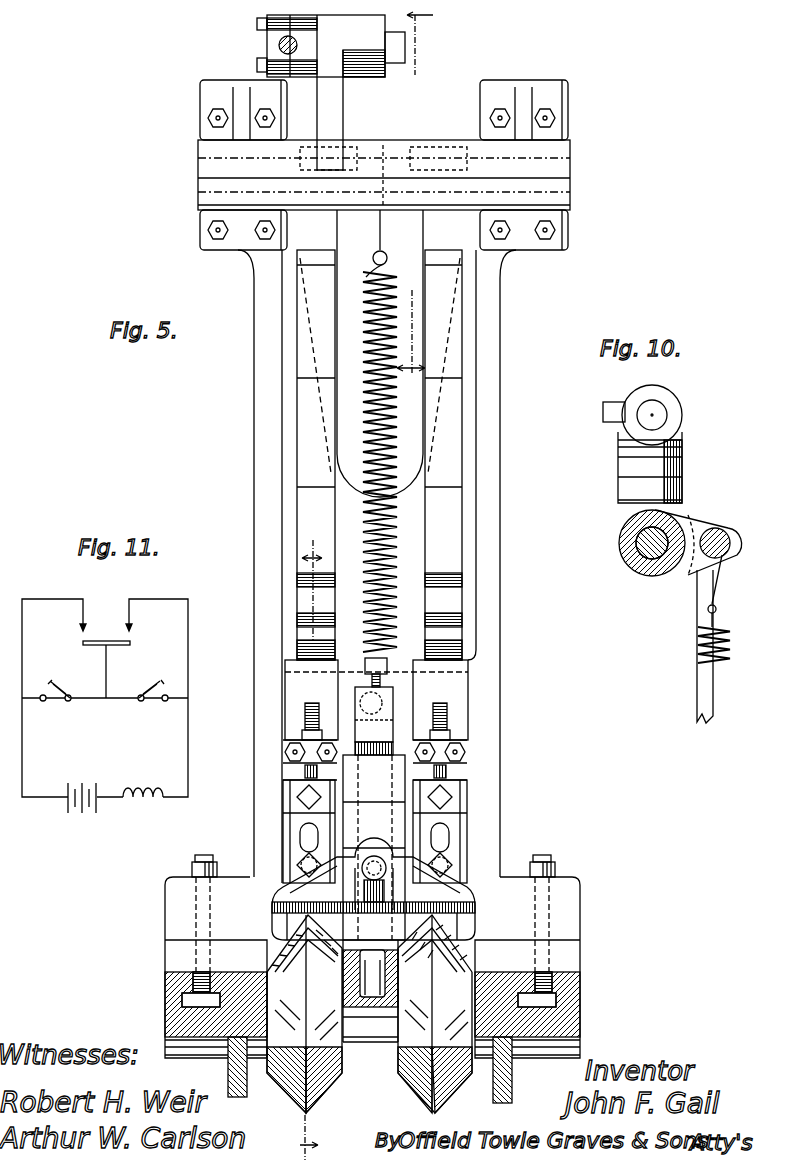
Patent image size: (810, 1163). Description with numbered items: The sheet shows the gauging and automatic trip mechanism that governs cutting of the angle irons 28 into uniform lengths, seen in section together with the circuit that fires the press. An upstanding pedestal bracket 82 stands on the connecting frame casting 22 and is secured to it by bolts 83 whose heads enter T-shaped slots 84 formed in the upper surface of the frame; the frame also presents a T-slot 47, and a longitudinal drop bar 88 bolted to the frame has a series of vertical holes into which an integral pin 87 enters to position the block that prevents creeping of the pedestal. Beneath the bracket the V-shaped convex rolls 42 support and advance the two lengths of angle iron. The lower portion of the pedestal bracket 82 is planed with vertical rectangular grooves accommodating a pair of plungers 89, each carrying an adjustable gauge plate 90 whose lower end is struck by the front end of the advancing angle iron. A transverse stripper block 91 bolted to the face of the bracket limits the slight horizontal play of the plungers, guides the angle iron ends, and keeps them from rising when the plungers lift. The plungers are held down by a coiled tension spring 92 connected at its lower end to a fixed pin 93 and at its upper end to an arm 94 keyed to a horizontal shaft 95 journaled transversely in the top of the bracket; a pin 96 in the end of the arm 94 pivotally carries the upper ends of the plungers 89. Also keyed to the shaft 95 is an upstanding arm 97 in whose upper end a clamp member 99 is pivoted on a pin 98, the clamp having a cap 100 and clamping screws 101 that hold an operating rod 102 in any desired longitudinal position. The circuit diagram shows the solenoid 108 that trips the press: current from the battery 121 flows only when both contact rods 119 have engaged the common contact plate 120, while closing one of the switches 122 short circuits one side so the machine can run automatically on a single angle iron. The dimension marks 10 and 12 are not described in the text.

In FIG. 5, the clearance dimension 10 is at (415, 197).
In FIG. 5, the clearance dimension 12 is at (300, 843).
In FIG. 5, the connecting frame casting 22 is at (513, 1097).
In FIG. 5, the angle irons 28 is at (283, 955).
In FIG. 5, the V-shaped convex rolls 42 is at (400, 1088).
In FIG. 5, the T-slot 47 is at (580, 985).
In FIG. 5, the pedestal bracket 82 is at (492, 400).
In FIG. 5, the bolts 83 is at (215, 872).
In FIG. 5, the T-shaped slots 84 is at (185, 1000).
In FIG. 5, the integral pin 87 is at (378, 983).
In FIG. 5, the drop bar 88 is at (385, 1013).
In FIG. 5, the plungers 89 is at (307, 318).
In FIG. 10, the plungers 89 is at (712, 697).
In FIG. 5, the gauge plate 90 is at (462, 880).
In FIG. 5, the stripper block 91 is at (374, 813).
In FIG. 5, the coiled tension spring 92 is at (388, 580).
In FIG. 10, the coiled tension spring 92 is at (728, 657).
In FIG. 5, the fixed pin 93 is at (378, 662).
In FIG. 10, the arm 94 is at (698, 520).
In FIG. 10, the horizontal shaft 95 is at (658, 567).
In FIG. 10, the pin 96 is at (722, 535).
In FIG. 5, the upstanding arm 97 is at (333, 123).
In FIG. 10, the upstanding arm 97 is at (672, 465).
In FIG. 5, the pin 98 is at (392, 33).
In FIG. 10, the pin 98 is at (660, 410).
In FIG. 5, the clamp member 99 is at (300, 25).
In FIG. 5, the cap 100 is at (268, 17).
In FIG. 5, the clamping screws 101 is at (262, 27).
In FIG. 5, the operating rod 102 is at (280, 45).
In FIG. 10, the operating rod 102 is at (611, 402).
In FIG. 11, the solenoid 108 is at (142, 790).
In FIG. 11, the contact rod 119 is at (83, 620).
In FIG. 11, the contact plate 120 is at (116, 646).
In FIG. 11, the battery 121 is at (68, 808).
In FIG. 11, the switches 122 is at (60, 686).